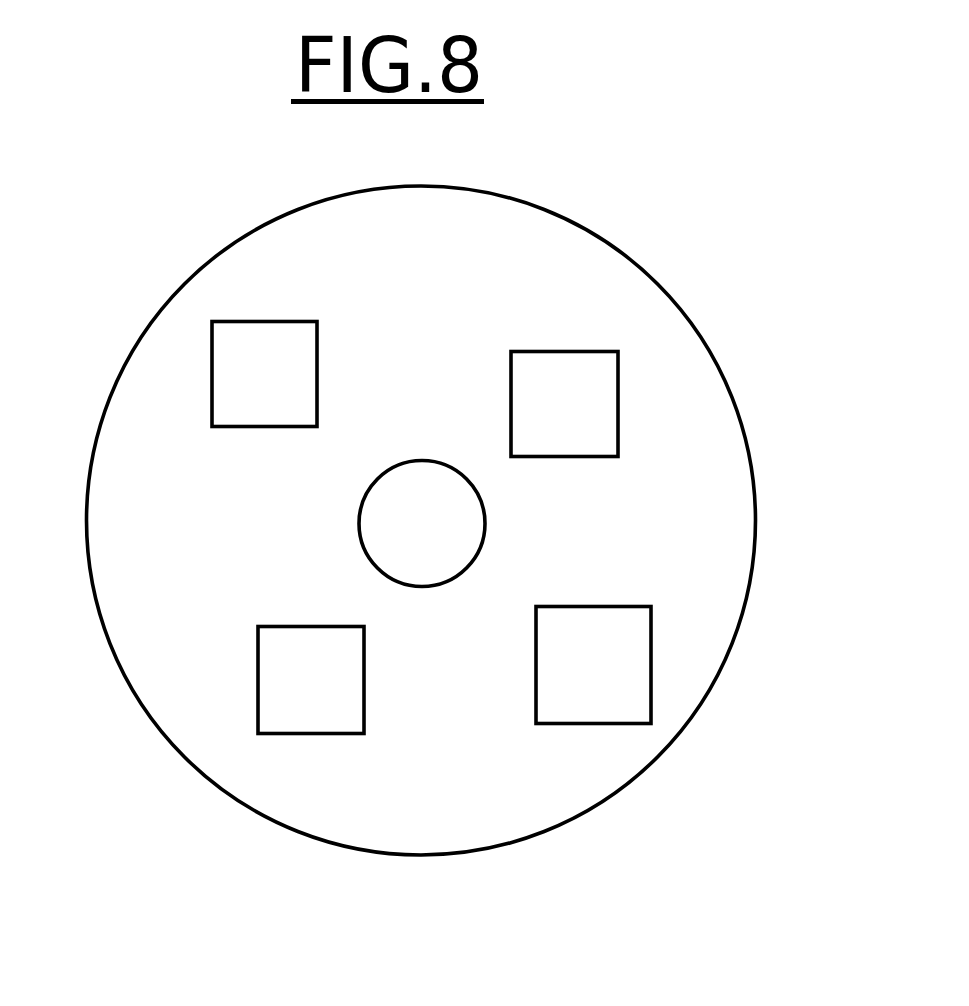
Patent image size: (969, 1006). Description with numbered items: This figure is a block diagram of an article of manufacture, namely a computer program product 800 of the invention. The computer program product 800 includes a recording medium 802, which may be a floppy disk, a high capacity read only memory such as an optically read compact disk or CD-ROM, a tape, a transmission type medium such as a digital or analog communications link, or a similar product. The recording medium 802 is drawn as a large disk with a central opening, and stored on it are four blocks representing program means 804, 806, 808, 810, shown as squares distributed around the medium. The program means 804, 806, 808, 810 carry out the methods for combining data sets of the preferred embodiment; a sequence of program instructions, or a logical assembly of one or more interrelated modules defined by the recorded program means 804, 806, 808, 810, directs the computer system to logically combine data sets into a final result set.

The computer program product 800 is at (707, 300).
The recording medium 802 is at (146, 323).
The program means 804 is at (311, 680).
The program means 806 is at (593, 665).
The program means 808 is at (564, 404).
The program means 810 is at (264, 374).